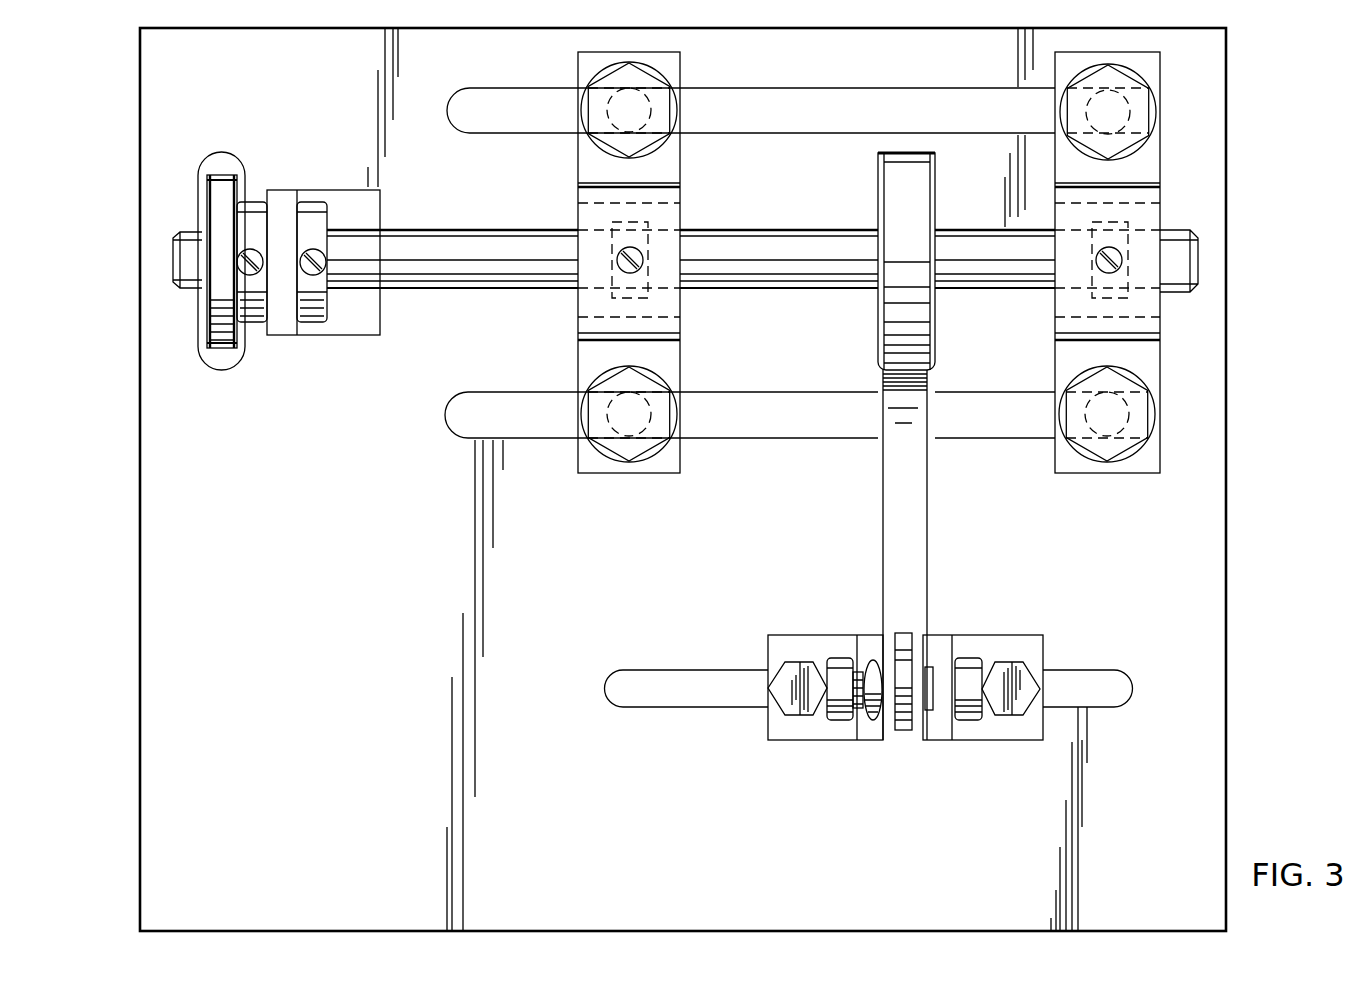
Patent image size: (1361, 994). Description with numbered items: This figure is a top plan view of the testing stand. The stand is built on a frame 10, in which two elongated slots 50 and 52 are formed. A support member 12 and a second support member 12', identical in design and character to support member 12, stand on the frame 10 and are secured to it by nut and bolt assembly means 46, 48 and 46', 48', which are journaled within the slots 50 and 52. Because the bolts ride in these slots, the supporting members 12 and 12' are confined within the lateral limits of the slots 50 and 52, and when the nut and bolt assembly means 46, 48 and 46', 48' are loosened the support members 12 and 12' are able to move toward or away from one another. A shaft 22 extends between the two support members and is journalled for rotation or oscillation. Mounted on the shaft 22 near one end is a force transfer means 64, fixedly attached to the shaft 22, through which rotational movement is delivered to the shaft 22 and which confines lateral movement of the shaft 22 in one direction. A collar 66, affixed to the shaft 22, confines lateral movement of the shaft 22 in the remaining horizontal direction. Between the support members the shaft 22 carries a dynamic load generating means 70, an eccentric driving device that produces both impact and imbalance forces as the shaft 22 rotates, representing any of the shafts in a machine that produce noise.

The frame 10 is at (345, 593).
The support member 12 is at (1137, 262).
The second support member 12' is at (570, 262).
The shaft 22 is at (796, 282).
The nut and bolt assembly means 46 is at (1140, 117).
The nut and bolt assembly means 46' is at (592, 119).
The nut and bolt assembly means 48 is at (1135, 414).
The nut and bolt assembly means 48' is at (595, 426).
The slot 50 is at (797, 132).
The slot 52 is at (818, 438).
The force transfer means 64 is at (221, 352).
The collar 66 is at (316, 312).
The dynamic load generating means 70 is at (876, 197).